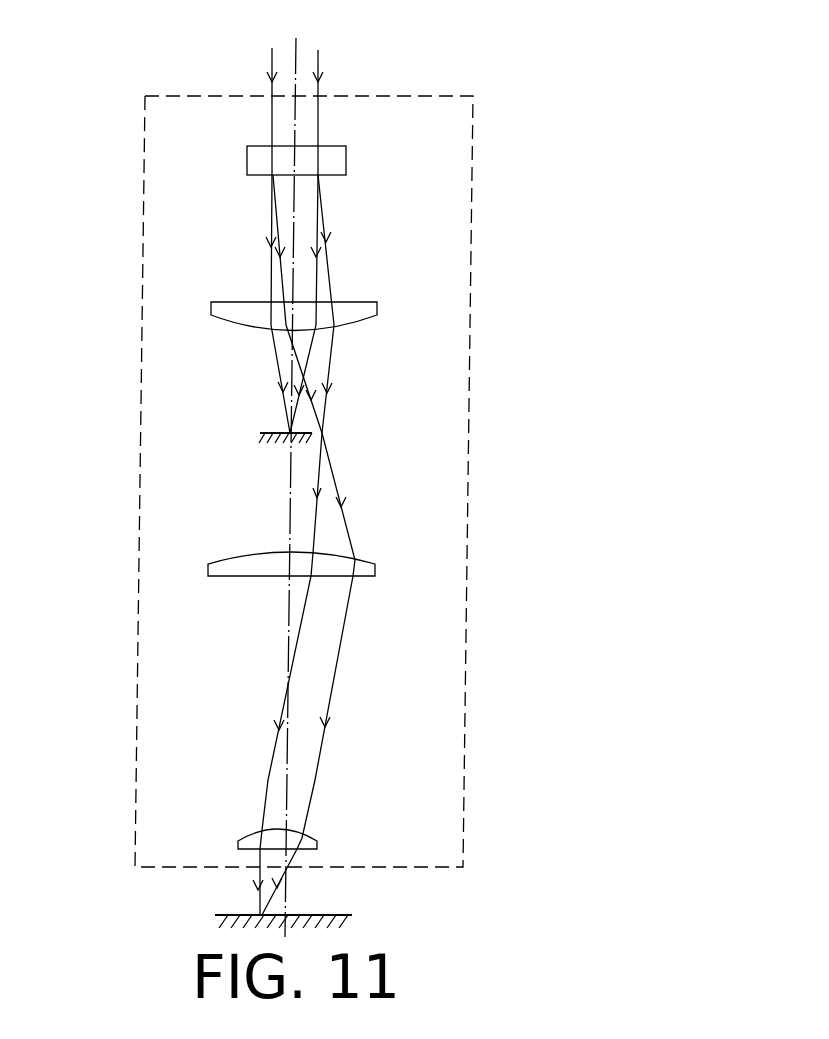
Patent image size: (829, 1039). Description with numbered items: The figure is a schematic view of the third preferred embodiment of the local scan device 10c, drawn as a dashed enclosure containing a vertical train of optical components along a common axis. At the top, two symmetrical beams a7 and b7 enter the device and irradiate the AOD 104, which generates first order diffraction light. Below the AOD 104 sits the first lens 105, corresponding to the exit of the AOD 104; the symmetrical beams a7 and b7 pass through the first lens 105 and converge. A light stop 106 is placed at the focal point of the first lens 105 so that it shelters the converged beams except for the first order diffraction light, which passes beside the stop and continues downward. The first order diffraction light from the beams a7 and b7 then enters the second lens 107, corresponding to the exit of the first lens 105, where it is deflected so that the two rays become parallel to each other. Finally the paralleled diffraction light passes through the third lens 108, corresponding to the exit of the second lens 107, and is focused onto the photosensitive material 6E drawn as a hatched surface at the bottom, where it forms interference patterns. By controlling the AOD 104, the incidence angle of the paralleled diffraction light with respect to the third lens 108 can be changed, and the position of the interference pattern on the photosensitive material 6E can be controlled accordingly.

The local scan device 10c is at (147, 153).
The symmetrical beam a7 is at (287, 466).
The symmetrical beam b7 is at (317, 466).
The AOD 104 is at (344, 163).
The first lens 105 is at (377, 307).
The light stop 106 is at (268, 432).
The second lens 107 is at (370, 568).
The third lens 108 is at (317, 842).
The photosensitive material 6E is at (342, 915).